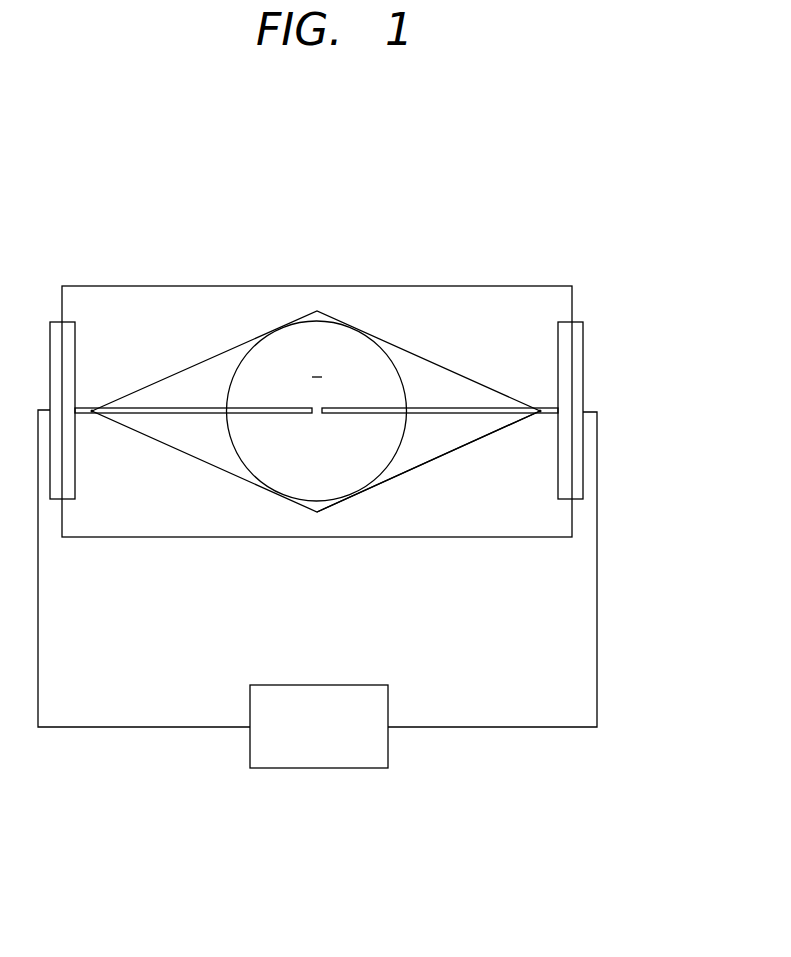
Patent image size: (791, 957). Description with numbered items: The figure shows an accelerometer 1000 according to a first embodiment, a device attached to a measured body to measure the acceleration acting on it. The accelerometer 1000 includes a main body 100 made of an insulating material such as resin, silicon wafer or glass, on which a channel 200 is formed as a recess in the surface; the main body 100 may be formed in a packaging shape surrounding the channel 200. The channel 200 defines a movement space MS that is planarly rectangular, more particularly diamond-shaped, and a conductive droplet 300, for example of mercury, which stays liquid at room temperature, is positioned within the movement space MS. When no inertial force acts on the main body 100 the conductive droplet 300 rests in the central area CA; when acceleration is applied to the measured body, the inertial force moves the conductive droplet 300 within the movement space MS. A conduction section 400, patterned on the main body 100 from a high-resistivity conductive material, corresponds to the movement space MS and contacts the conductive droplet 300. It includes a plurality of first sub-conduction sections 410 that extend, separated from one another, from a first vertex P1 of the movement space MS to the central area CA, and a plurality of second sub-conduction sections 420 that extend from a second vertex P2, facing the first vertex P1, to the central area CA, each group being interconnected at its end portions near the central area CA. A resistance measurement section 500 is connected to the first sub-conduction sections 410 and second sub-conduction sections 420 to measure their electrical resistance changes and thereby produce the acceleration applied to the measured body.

The accelerometer 1000 is at (336, 211).
The main body 100 is at (370, 296).
The channel 200 is at (402, 358).
The conductive droplet 300 is at (287, 342).
The conduction section 400 is at (506, 407).
The first sub-conduction section 410 is at (488, 408).
The second sub-conduction section 420 is at (148, 410).
The resistance measurement section 500 is at (360, 685).
The central area CA is at (317, 377).
The movement space MS is at (425, 442).
The first vertex P1 is at (547, 413).
The second vertex P2 is at (89, 413).